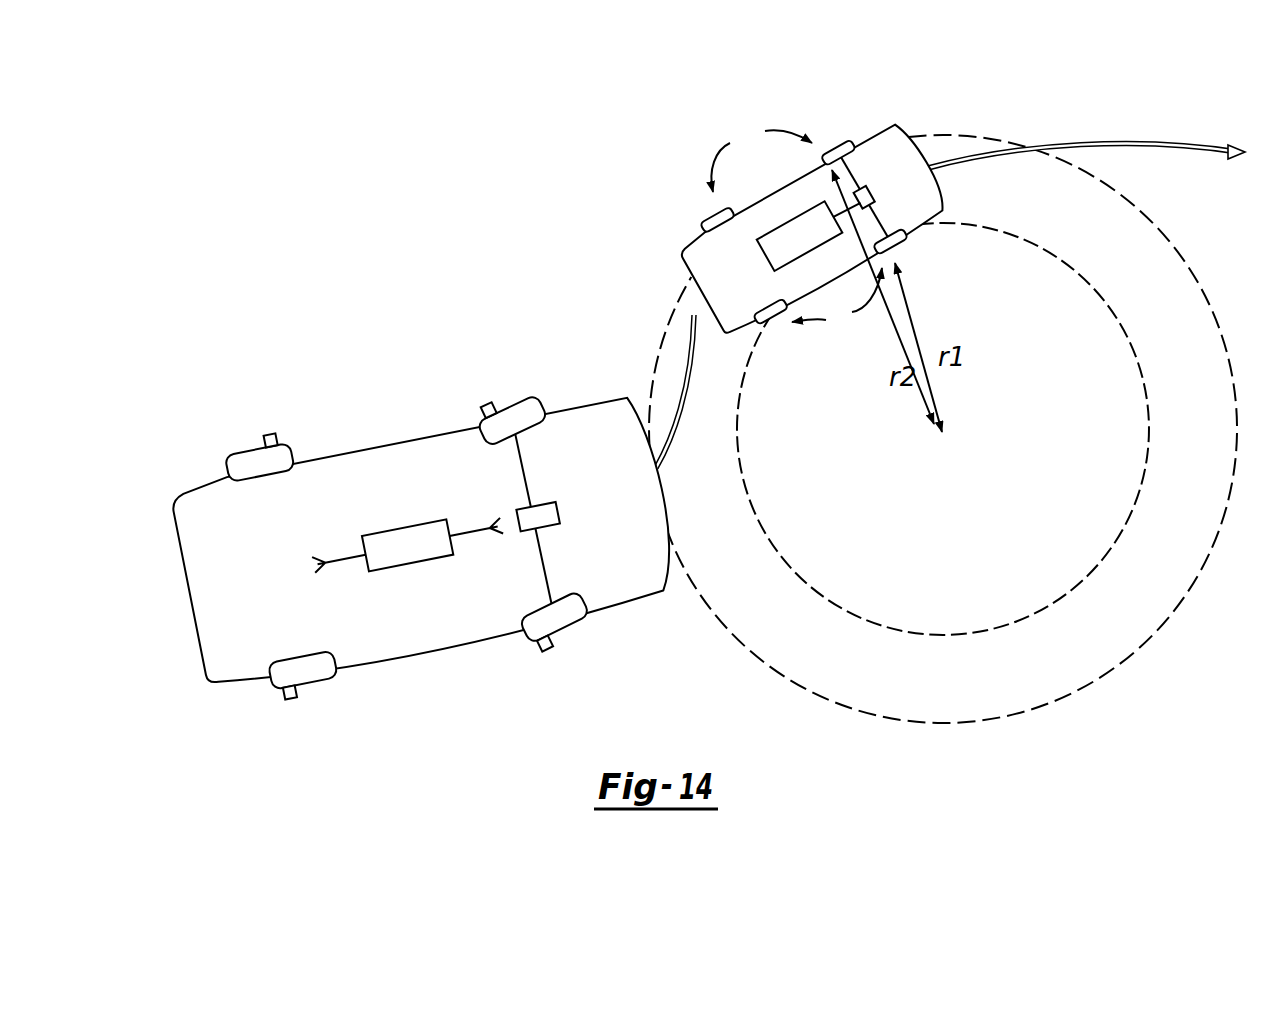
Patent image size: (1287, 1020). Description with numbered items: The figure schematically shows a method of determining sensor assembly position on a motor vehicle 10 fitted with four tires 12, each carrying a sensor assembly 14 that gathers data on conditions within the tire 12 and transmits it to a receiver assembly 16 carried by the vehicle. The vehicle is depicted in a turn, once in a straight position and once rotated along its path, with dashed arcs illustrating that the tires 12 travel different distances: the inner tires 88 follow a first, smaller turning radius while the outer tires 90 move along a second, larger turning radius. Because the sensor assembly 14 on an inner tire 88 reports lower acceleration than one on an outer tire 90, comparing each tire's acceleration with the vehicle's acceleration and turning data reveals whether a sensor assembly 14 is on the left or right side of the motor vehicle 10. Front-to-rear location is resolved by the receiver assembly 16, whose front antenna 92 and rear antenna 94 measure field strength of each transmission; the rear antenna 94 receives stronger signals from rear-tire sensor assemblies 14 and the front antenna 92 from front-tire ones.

The motor vehicle 10 is at (353, 450).
The tire 12 is at (230, 474).
The sensor assembly 14 is at (272, 440).
The receiver assembly 16 is at (404, 525).
The inner tires 88 is at (837, 301).
The outer tires 90 is at (761, 156).
The front antenna 92 is at (467, 532).
The rear antenna 94 is at (350, 560).